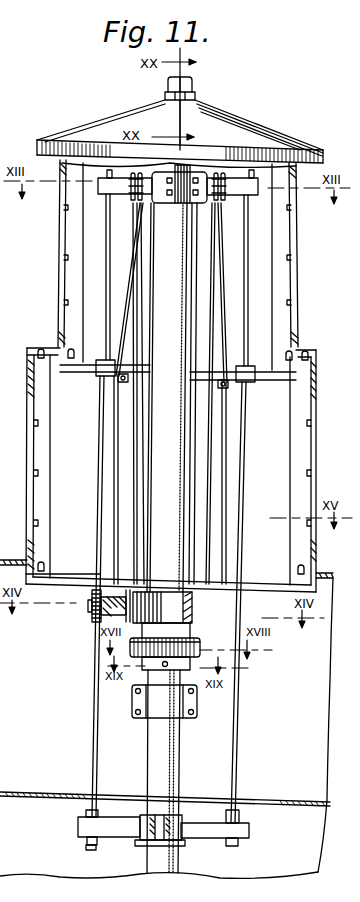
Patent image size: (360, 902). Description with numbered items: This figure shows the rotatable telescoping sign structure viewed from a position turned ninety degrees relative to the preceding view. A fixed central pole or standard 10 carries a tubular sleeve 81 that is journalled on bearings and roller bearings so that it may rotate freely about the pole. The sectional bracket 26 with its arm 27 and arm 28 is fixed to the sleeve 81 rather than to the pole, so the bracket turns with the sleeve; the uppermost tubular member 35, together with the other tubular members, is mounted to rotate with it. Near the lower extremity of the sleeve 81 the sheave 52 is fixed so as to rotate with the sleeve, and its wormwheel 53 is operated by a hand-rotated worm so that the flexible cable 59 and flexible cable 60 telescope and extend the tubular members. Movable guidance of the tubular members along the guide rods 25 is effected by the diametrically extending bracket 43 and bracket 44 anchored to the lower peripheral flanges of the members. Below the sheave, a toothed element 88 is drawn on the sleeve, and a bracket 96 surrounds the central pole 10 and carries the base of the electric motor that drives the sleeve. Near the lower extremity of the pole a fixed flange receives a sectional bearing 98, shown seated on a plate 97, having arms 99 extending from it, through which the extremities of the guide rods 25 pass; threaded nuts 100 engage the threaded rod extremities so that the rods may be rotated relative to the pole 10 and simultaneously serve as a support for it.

The central pole or standard 10 is at (170, 767).
The guide rods 25 is at (100, 492).
The sectional bracket 26 is at (163, 206).
The arm of sectional bracket 27 is at (126, 190).
The arm of sectional bracket 28 is at (235, 182).
The tubular member 35 is at (297, 246).
The bracket 43 is at (62, 578).
The bracket 44 is at (94, 376).
The sheave 52 is at (168, 594).
The wormwheel 53 is at (94, 608).
The flexible cable 59 is at (134, 453).
The flexible cable 60 is at (226, 456).
The tubular sleeve 81 is at (186, 312).
The gear 88 is at (196, 652).
The bracket 96 is at (160, 708).
The base plate 97 is at (160, 846).
The sectional bearing 98 is at (172, 818).
The arms 99 is at (112, 825).
The threaded nuts 100 is at (88, 838).